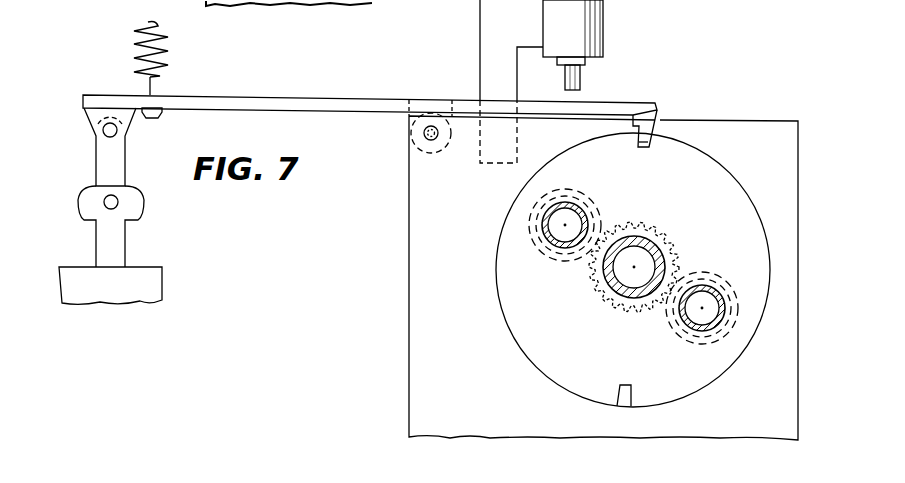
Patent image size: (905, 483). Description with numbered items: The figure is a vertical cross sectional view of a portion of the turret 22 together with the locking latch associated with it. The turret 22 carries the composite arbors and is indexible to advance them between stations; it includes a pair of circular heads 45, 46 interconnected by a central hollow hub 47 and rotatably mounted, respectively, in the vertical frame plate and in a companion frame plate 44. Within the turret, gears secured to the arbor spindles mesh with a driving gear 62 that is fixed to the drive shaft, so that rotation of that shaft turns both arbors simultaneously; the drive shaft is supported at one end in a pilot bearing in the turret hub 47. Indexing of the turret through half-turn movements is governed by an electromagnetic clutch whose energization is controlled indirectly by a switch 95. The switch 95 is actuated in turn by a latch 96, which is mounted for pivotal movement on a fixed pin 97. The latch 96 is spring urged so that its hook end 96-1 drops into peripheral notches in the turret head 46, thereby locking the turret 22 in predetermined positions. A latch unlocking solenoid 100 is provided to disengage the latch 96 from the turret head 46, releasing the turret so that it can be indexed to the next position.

The turret 22 is at (767, 212).
The companion frame plate 44 is at (780, 362).
The circular head 45 is at (374, 81).
The circular head 46 is at (530, 320).
The central hollow hub 47 is at (613, 292).
The driving gear 62 is at (667, 228).
The switch 95 is at (608, 28).
The latch 96 is at (350, 98).
The hook end 96-1 is at (633, 138).
The fixed pin 97 is at (421, 136).
The latch unlocking solenoid 100 is at (152, 288).